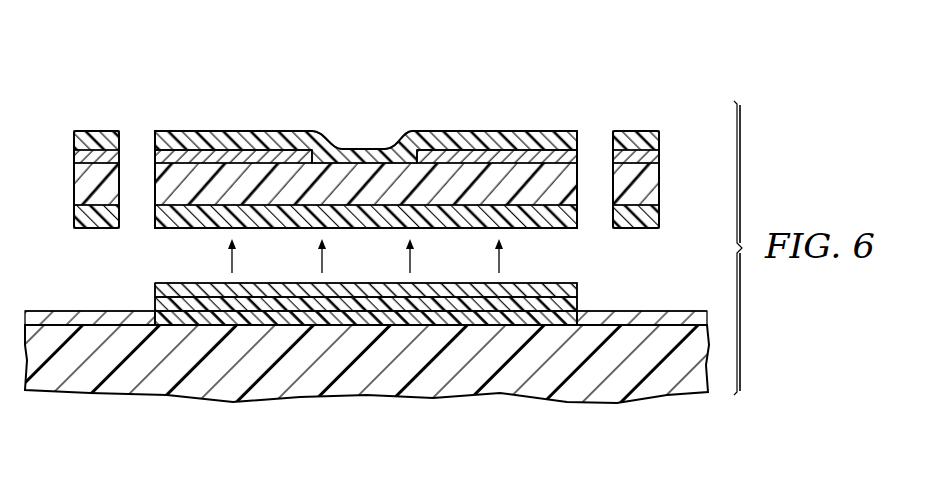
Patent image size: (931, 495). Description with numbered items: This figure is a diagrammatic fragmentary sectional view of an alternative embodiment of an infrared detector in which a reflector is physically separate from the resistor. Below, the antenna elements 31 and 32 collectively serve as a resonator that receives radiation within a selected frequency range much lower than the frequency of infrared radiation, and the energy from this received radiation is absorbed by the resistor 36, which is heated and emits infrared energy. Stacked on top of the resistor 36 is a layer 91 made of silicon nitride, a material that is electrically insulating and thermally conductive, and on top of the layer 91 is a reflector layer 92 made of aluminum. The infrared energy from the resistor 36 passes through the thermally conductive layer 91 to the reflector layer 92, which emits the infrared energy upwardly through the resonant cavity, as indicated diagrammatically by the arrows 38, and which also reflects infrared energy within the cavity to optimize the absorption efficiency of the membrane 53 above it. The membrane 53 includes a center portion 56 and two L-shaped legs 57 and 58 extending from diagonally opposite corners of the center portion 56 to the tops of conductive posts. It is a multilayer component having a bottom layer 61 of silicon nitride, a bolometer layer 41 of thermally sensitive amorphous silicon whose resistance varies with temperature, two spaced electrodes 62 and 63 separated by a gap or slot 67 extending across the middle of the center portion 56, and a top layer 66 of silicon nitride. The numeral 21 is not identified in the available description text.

The membrane 53 is at (305, 66).
The L-shaped leg 57 is at (97, 122).
The center portion 56 is at (485, 122).
The L-shaped leg 58 is at (650, 122).
The top layer 66 is at (82, 142).
The electrode 62 is at (82, 157).
The bottom layer 61 is at (82, 217).
The electrode 63 is at (651, 157).
The gap or slot 67 is at (322, 160).
The bolometer layer 41 is at (283, 197).
The infrared radiation arrows 38 is at (231, 258).
The reflector layer 92 is at (533, 287).
The layer 91 is at (162, 303).
The resistor 36 is at (527, 318).
The antenna element 31 is at (65, 318).
The antenna element 32 is at (677, 314).
The substrate 21 is at (614, 393).